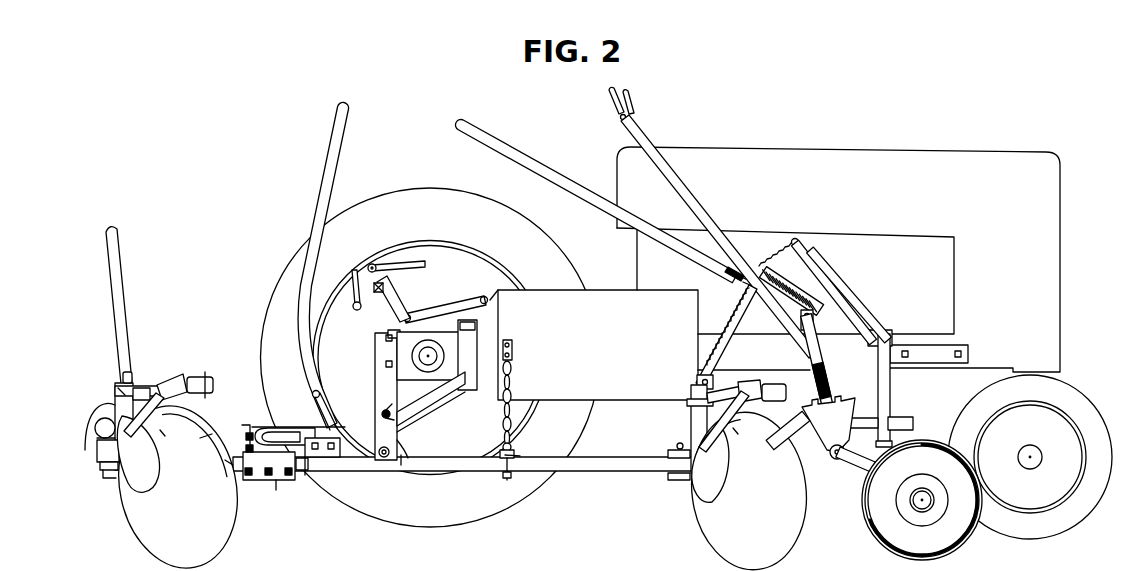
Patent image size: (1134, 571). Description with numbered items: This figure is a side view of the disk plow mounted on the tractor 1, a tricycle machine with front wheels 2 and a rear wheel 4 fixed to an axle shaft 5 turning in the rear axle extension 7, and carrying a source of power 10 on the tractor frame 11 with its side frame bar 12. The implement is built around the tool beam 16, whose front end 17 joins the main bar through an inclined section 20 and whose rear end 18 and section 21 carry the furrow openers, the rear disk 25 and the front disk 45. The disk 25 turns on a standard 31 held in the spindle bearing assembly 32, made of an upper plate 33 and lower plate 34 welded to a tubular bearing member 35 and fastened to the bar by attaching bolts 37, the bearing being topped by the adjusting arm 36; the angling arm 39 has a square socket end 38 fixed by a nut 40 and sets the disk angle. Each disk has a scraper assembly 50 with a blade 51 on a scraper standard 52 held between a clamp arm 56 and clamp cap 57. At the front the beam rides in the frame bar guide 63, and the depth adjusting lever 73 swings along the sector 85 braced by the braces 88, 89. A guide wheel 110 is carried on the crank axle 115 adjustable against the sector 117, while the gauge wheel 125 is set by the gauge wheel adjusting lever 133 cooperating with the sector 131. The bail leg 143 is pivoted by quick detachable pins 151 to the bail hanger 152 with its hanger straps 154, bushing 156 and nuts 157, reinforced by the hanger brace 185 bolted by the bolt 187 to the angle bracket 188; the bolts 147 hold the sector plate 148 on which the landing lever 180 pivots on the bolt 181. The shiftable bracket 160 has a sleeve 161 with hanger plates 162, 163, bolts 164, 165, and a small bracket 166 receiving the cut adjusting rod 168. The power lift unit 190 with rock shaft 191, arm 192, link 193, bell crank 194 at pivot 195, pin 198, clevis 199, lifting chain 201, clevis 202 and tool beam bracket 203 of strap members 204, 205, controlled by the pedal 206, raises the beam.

The tractor 1 is at (947, 140).
The front wheels 2 is at (1066, 392).
The rear wheel 4 is at (452, 205).
The axle shaft 5 is at (387, 395).
The rear axle extension 7 is at (422, 371).
The source of power 10 is at (708, 307).
The tractor frame 11 is at (919, 330).
The side frame bar 12 is at (757, 340).
The tool beam 16 is at (617, 474).
The front end of tool beam 17 is at (905, 418).
The rear end of tool beam 18 is at (98, 463).
The inclined section 20 is at (798, 443).
The bar section 21 is at (683, 460).
The disk 25 is at (152, 540).
The standard 31 is at (128, 370).
The disk spindle bearing assembly 32 is at (100, 427).
The upper plate 33 is at (95, 448).
The lower plate 34 is at (104, 472).
The tubular bearing member 35 is at (118, 410).
The disk spindle adjusting arm 36 is at (145, 392).
The attaching bolts 37 is at (97, 438).
The square socket end 38 is at (117, 388).
The disk angling arm 39 is at (160, 385).
The nut 40 is at (131, 373).
The disk 45 is at (790, 545).
The scraper assembly 50 is at (439, 430).
The blade 51 is at (140, 483).
The scraper standard 52 is at (163, 424).
The clamp arm 56 is at (207, 378).
The clamp cap 57 is at (177, 382).
The frame bar guide 63 is at (893, 392).
The depth adjusting lever 73 is at (598, 205).
The sector 85 is at (772, 252).
The brace 88 is at (822, 283).
The brace 89 is at (858, 304).
The guide wheel 110 is at (950, 537).
The guide wheel crank axle 115 is at (848, 477).
The sector 117 is at (842, 402).
The gauge wheel 125 is at (203, 440).
The sector 131 is at (90, 418).
The gauge wheel adjusting lever 133 is at (108, 252).
The frame bail leg 143 is at (284, 430).
The bolts 147 is at (322, 470).
The sector plate 148 is at (342, 428).
The quick detachable pins 151 is at (385, 458).
The bail hanger 152 is at (383, 353).
The hanger straps 154 is at (401, 468).
The bushing 156 is at (407, 455).
The nuts 157 is at (390, 362).
The shiftable bracket 160 is at (286, 494).
The sleeve 161 is at (278, 480).
The hanger plate 162 is at (306, 476).
The hanger plate 163 is at (228, 470).
The bolt 164 is at (288, 477).
The bolt 165 is at (250, 446).
The small bracket 166 is at (250, 434).
The cut adjusting rod 168 is at (258, 428).
The landing lever 180 is at (320, 210).
The bolt 181 is at (336, 462).
The hanger brace 185 is at (419, 406).
The bolt 187 is at (446, 391).
The angle bracket 188 is at (457, 403).
The power lift unit 190 is at (340, 265).
The rock shaft 191 is at (352, 278).
The arm 192 is at (388, 306).
The link 193 is at (437, 312).
The lifting bell crank 194 is at (500, 300).
The pivot 195 is at (478, 328).
The pin 198 is at (512, 350).
The lifting chain clevis 199 is at (514, 367).
The lifting chain 201 is at (512, 397).
The clevis 202 is at (514, 440).
The tool beam bracket 203 is at (516, 452).
The upper strap member 204 is at (510, 456).
The lower strap member 205 is at (506, 481).
The pedal 206 is at (397, 262).